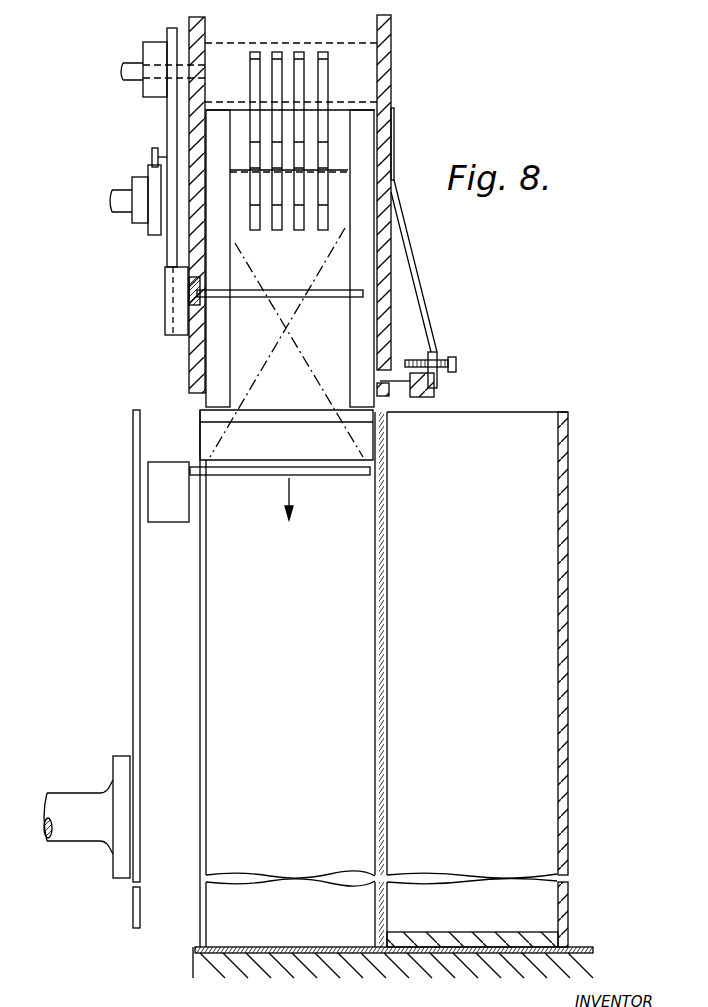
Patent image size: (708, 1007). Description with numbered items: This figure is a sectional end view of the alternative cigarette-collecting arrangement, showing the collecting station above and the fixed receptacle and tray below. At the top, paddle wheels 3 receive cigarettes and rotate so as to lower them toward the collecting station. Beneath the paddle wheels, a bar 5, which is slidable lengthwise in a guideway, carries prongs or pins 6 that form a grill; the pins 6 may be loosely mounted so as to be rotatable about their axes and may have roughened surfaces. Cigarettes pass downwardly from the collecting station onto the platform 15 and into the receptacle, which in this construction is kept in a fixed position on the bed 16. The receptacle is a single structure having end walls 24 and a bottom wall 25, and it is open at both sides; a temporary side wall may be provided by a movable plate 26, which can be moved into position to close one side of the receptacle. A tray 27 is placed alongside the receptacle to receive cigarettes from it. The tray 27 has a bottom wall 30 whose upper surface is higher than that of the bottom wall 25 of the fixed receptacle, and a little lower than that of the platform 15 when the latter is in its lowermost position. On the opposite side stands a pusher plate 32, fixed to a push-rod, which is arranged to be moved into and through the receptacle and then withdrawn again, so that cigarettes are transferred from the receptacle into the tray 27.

The paddle wheels 3 is at (322, 60).
The bar 5 is at (190, 289).
The prongs or pins 6 is at (298, 290).
The platform 15 is at (205, 467).
The bed 16 is at (195, 965).
The end walls 24 is at (207, 684).
The bottom wall 25 is at (250, 947).
The movable plate 26 is at (382, 582).
The tray 27 is at (512, 407).
The bottom wall 30 is at (474, 937).
The pusher plate 32 is at (137, 570).